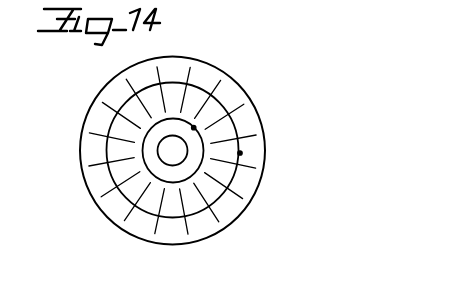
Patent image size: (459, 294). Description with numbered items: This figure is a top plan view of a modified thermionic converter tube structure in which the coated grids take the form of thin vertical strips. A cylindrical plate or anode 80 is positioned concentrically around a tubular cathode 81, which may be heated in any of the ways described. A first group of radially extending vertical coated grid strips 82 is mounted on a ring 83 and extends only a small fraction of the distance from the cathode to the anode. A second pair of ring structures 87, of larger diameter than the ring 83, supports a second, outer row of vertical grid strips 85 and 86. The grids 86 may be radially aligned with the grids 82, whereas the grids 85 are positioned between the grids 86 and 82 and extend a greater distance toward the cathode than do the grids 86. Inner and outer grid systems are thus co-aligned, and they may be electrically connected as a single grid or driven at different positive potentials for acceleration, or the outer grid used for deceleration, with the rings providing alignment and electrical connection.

The anode 80 is at (127, 71).
The tubular cathode 81 is at (150, 150).
The vertical coated grid strips 82 is at (182, 114).
The ring 83 is at (194, 128).
The vertical grid strips 85 is at (246, 136).
The vertical grids 86 is at (204, 222).
The ring structures 87 is at (240, 153).